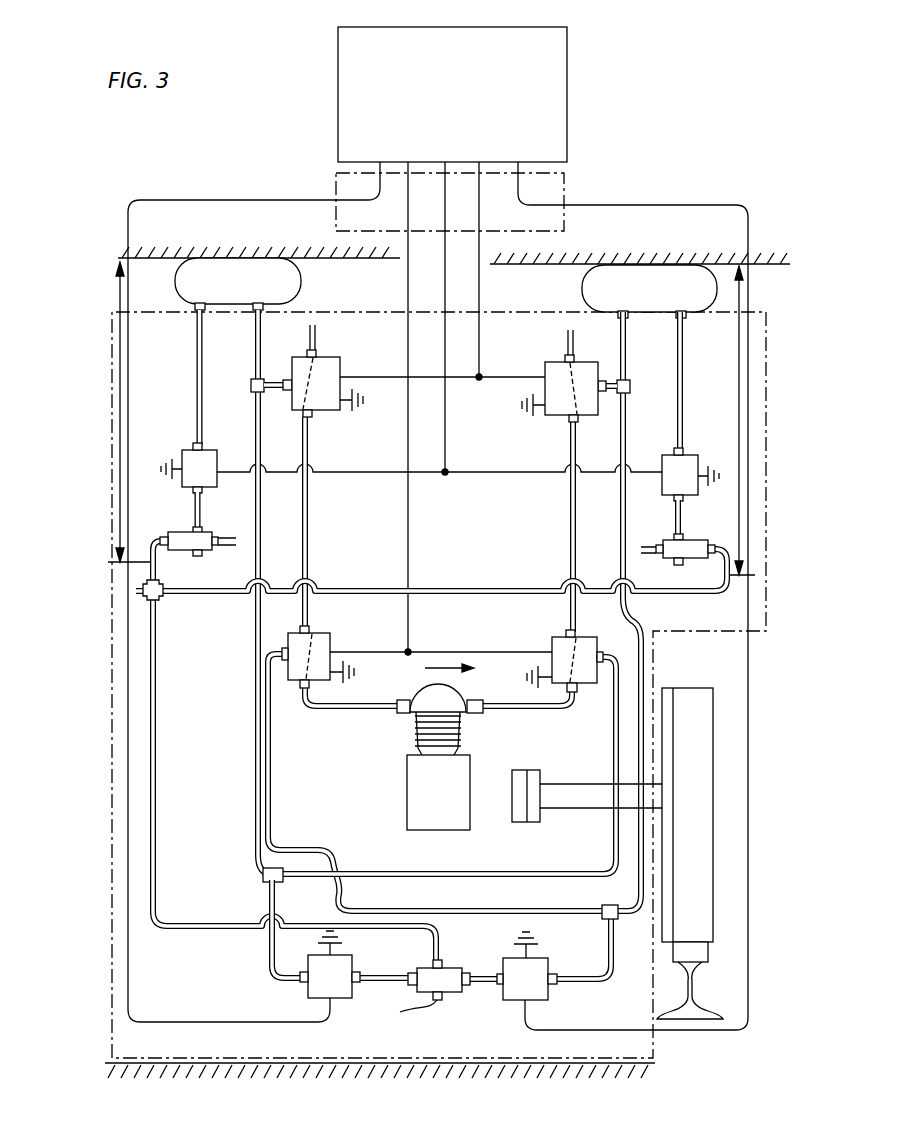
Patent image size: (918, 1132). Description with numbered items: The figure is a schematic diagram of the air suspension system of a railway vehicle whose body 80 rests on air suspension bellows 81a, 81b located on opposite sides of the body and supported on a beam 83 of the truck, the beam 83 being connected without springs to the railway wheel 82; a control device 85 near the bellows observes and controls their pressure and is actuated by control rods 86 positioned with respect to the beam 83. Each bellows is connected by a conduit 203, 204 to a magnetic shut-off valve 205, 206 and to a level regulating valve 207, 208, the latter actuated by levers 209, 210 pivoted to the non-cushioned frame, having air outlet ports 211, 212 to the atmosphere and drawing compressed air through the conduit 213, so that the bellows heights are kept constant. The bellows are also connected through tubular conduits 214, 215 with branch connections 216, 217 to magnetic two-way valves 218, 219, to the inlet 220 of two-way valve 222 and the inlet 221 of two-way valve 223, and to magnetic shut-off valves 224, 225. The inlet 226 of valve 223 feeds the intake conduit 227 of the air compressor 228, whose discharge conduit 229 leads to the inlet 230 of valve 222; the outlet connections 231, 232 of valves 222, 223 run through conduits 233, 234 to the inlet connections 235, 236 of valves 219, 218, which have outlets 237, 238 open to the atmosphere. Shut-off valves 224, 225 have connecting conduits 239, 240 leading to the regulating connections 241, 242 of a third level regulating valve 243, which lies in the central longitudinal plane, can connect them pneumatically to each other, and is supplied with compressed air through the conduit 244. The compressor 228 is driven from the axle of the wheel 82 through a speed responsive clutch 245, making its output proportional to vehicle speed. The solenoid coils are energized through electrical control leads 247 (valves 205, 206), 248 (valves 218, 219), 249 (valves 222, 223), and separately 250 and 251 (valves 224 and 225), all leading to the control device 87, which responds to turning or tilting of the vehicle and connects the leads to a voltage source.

The vehicle body 80 is at (468, 1066).
The railway wheel 82 is at (692, 690).
The beam 83 is at (128, 257).
The control device 85 is at (104, 632).
The control rods 86 is at (118, 406).
The control device 87 is at (568, 87).
The air suspension bellows 81a is at (231, 262).
The air suspension bellows 81b is at (628, 266).
The conduit 203 is at (198, 380).
The conduit 204 is at (684, 380).
The magnetic controlled shut-off valve 205 is at (190, 455).
The magnetic controlled shut-off valve 206 is at (699, 455).
The level regulating valve 207 is at (188, 531).
The level regulating valve 208 is at (685, 540).
The lever 209 is at (176, 555).
The lever 210 is at (678, 566).
The air outlet port 211 is at (243, 511).
The air outlet port 212 is at (672, 535).
The conduit 213 is at (338, 589).
The tubular conduit 214 is at (262, 352).
The tubular conduit 215 is at (628, 357).
The branch connection 216 is at (285, 392).
The branch connection 217 is at (612, 398).
The magnetic two-way valve 218 is at (346, 376).
The magnetic two-way valve 219 is at (553, 367).
The inlet 220 is at (636, 636).
The inlet 221 is at (290, 647).
The magnetic two-way valve 222 is at (551, 648).
The magnetic two-way valve 223 is at (330, 651).
The magnetic shut-off valve 224 is at (305, 968).
The magnetic shut-off valve 225 is at (544, 958).
The inlet 226 is at (302, 690).
The intake conduit 227 is at (357, 712).
The air compressor 228 is at (412, 792).
The discharge conduit 229 is at (532, 712).
The inlet 230 is at (578, 700).
The outlet connection 231 is at (578, 640).
The outlet connection 232 is at (312, 632).
The conduit 233 is at (568, 532).
The conduit 234 is at (308, 534).
The inlet connection 235 is at (568, 424).
The inlet connection 236 is at (313, 418).
The outlet 237 is at (343, 335).
The outlet 238 is at (574, 356).
The connecting conduit 239 is at (370, 985).
The connecting conduit 240 is at (483, 990).
The regulating connection 241 is at (417, 967).
The regulating connection 242 is at (462, 968).
The level regulating valve 243 is at (456, 993).
The conduit 244 is at (158, 774).
The speed responsive clutch 245 is at (536, 822).
The electrical control lead 247 is at (447, 220).
The electrical control lead 248 is at (482, 306).
The electrical control lead 249 is at (410, 240).
The electrical lead 250 is at (222, 200).
The electrical lead 251 is at (634, 205).